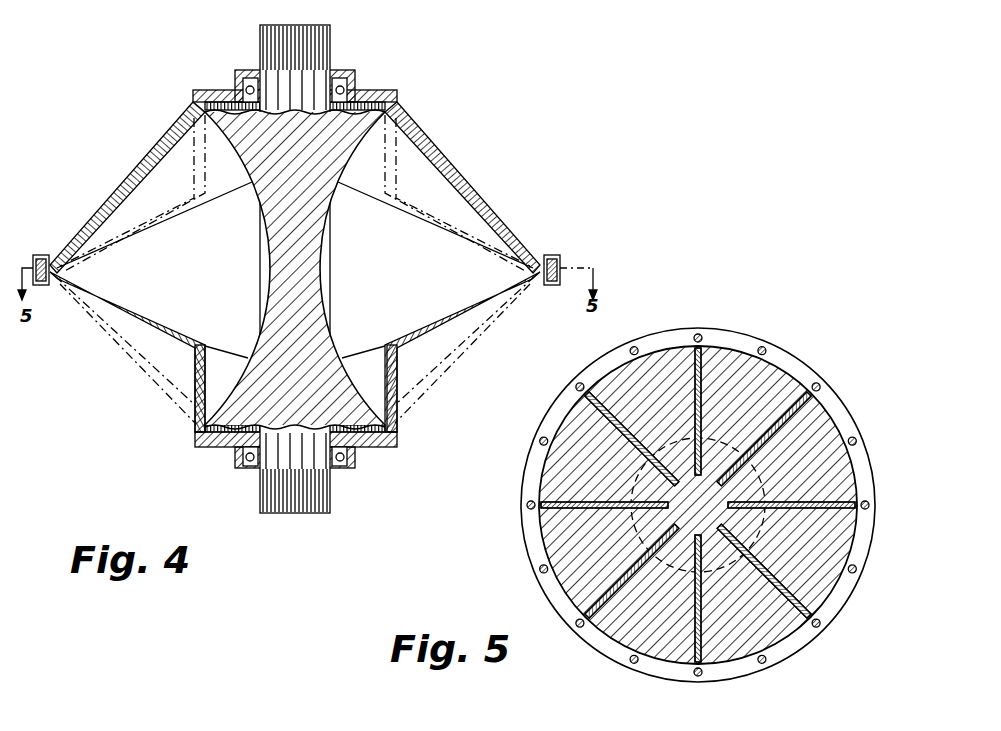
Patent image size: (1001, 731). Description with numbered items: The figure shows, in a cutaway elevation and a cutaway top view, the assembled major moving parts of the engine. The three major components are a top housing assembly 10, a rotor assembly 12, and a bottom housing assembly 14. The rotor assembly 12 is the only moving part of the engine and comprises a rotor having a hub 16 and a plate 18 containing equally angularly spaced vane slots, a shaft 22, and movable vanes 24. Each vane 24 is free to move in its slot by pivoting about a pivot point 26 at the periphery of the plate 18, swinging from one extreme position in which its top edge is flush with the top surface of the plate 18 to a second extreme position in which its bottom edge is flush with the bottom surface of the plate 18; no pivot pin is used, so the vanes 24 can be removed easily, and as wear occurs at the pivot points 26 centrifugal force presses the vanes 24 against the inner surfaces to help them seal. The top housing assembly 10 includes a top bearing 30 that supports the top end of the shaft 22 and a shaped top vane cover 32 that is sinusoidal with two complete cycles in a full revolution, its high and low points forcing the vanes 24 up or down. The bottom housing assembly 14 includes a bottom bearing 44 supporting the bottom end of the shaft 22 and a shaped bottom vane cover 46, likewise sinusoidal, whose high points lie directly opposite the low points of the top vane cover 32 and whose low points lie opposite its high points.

In FIG. 4, the top housing assembly 10 is at (212, 90).
In FIG. 4, the rotor assembly 12 is at (343, 133).
In FIG. 4, the bottom housing assembly 14 is at (200, 447).
In FIG. 5, the hub 16 is at (637, 537).
In FIG. 5, the plate 18 is at (773, 380).
In FIG. 4, the shaft 22 is at (317, 75).
In FIG. 5, the shaft 22 is at (760, 480).
In FIG. 4, the movable vanes 24 is at (218, 266).
In FIG. 5, the movable vanes 24 is at (592, 403).
In FIG. 4, the pivot point 26 is at (47, 256).
In FIG. 4, the top bearing 30 is at (355, 82).
In FIG. 4, the top vane cover 32 is at (443, 152).
In FIG. 4, the bottom bearing 44 is at (355, 452).
In FIG. 4, the bottom vane cover 46 is at (163, 335).